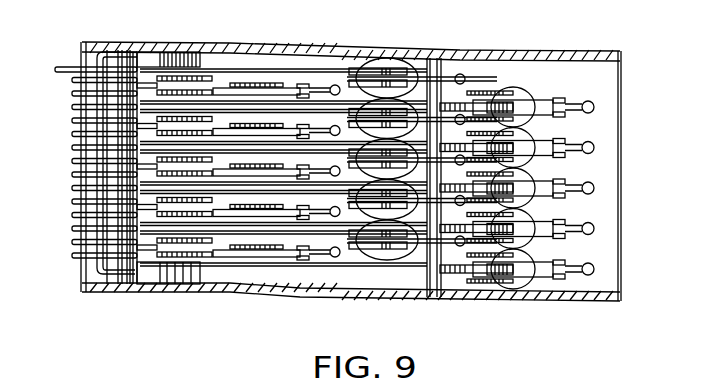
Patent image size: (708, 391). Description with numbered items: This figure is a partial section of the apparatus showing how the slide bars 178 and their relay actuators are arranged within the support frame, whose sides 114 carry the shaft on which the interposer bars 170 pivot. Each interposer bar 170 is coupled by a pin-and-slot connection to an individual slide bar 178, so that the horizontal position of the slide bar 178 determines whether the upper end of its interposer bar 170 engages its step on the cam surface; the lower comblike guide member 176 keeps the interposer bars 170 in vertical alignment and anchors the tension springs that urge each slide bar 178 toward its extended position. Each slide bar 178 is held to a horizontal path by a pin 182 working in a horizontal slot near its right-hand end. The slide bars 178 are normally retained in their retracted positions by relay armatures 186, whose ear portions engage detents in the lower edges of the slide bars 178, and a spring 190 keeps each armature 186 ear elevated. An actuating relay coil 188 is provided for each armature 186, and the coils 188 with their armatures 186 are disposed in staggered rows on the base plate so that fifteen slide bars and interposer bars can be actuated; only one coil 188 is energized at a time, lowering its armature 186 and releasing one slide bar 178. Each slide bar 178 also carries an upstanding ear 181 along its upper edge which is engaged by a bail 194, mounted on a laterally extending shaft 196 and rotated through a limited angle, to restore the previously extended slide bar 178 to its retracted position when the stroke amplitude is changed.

The sides of the support frame 114 is at (545, 52).
The interposer bar 170 is at (213, 244).
The lower comblike guide member 176 is at (177, 272).
The slide bar 178 is at (72, 177).
The upstanding ear 181 is at (144, 66).
The pin 182 is at (433, 283).
The relay armature 186 is at (548, 180).
The relay coil 188 is at (510, 283).
The spring 190 is at (593, 112).
The bail 194 is at (90, 271).
The laterally extending shaft 196 is at (117, 275).